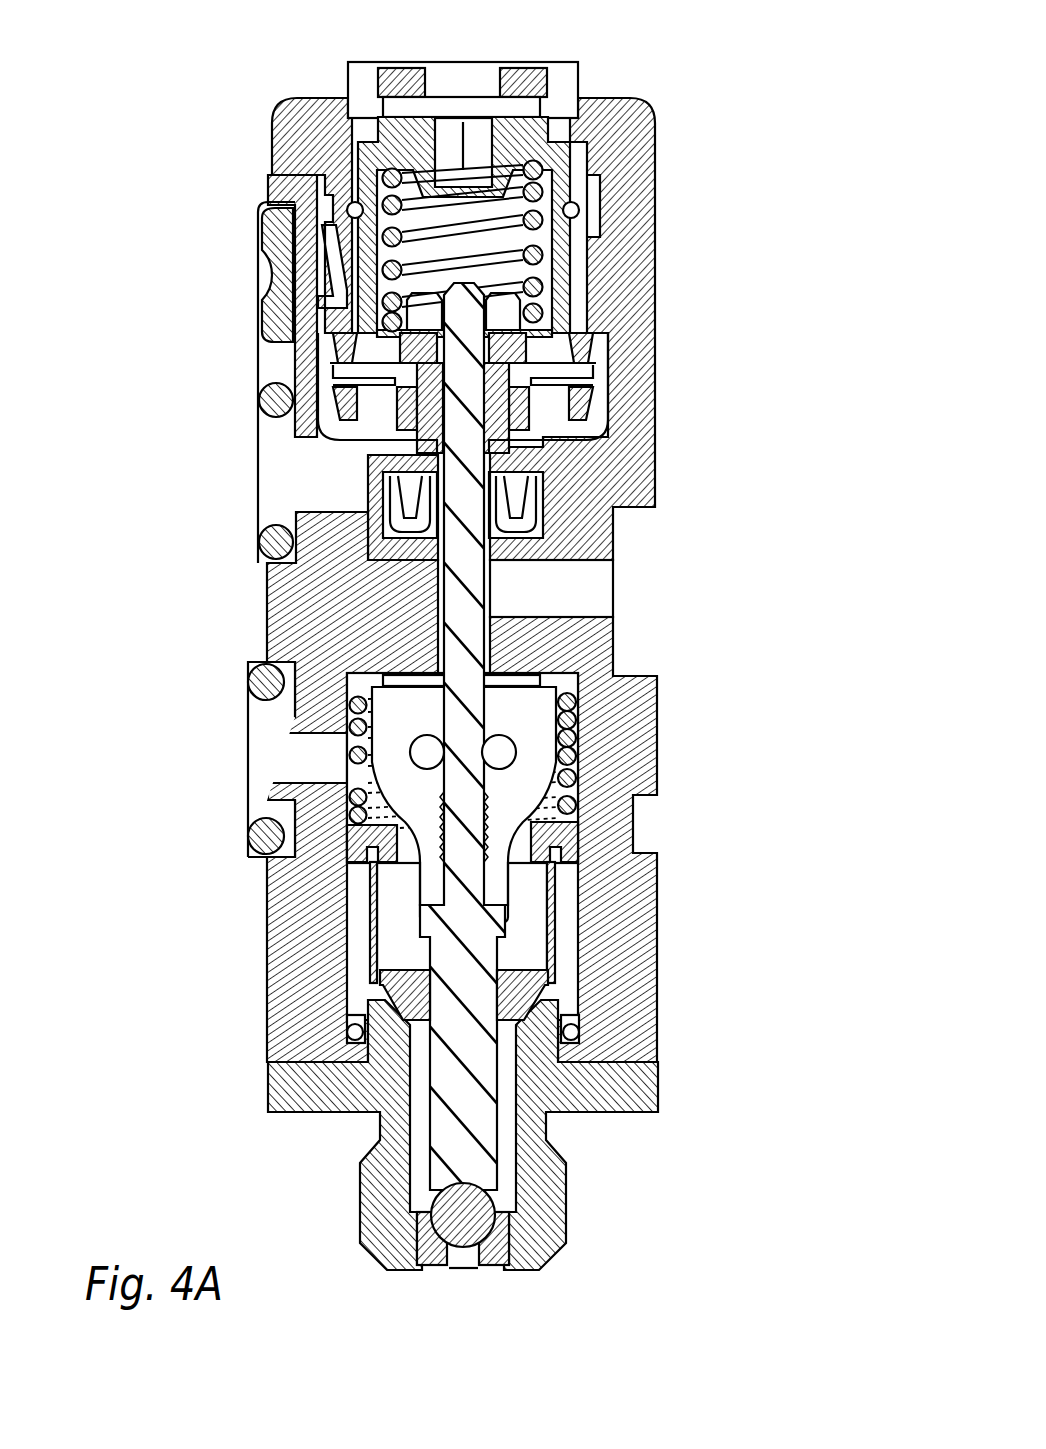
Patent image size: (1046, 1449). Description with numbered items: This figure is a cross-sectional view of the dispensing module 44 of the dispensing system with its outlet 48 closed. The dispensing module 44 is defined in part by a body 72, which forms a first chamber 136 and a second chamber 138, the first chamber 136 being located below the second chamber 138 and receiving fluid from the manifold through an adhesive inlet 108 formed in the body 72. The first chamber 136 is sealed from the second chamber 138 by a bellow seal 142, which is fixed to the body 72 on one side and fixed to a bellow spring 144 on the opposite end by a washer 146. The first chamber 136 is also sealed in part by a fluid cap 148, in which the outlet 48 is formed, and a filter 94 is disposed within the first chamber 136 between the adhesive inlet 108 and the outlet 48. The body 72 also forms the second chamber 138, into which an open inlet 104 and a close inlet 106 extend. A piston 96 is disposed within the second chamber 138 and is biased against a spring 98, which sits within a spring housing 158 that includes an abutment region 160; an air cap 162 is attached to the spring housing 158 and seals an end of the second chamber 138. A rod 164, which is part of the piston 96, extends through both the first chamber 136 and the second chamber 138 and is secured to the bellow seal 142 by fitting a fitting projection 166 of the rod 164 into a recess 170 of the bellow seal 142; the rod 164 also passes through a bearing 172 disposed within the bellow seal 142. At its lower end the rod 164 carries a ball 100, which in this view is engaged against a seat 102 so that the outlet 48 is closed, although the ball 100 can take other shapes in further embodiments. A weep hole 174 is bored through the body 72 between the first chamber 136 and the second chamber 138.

The dispensing module 44 is at (748, 78).
The air cap 162 is at (293, 97).
The spring housing 158 is at (598, 98).
The close inlet 106 is at (328, 268).
The spring 98 is at (540, 218).
The abutment region 160 is at (348, 325).
The second chamber 138 is at (598, 312).
The piston 96 is at (527, 418).
The open inlet 104 is at (327, 473).
The weep hole 174 is at (598, 576).
The rod 164 is at (455, 597).
The bearing 172 is at (523, 677).
The washer 146 is at (347, 678).
The body 72 is at (627, 716).
The bellow spring 144 is at (348, 717).
The bellow seal 142 is at (580, 757).
The adhesive inlet 108 is at (302, 757).
The fitting projection 166 is at (560, 835).
The recess 170 is at (495, 866).
The filter 94 is at (397, 917).
The first chamber 136 is at (562, 973).
The fluid cap 148 is at (543, 1185).
The seat 102 is at (437, 1268).
The ball 100 is at (466, 1222).
The outlet 48 is at (458, 1260).